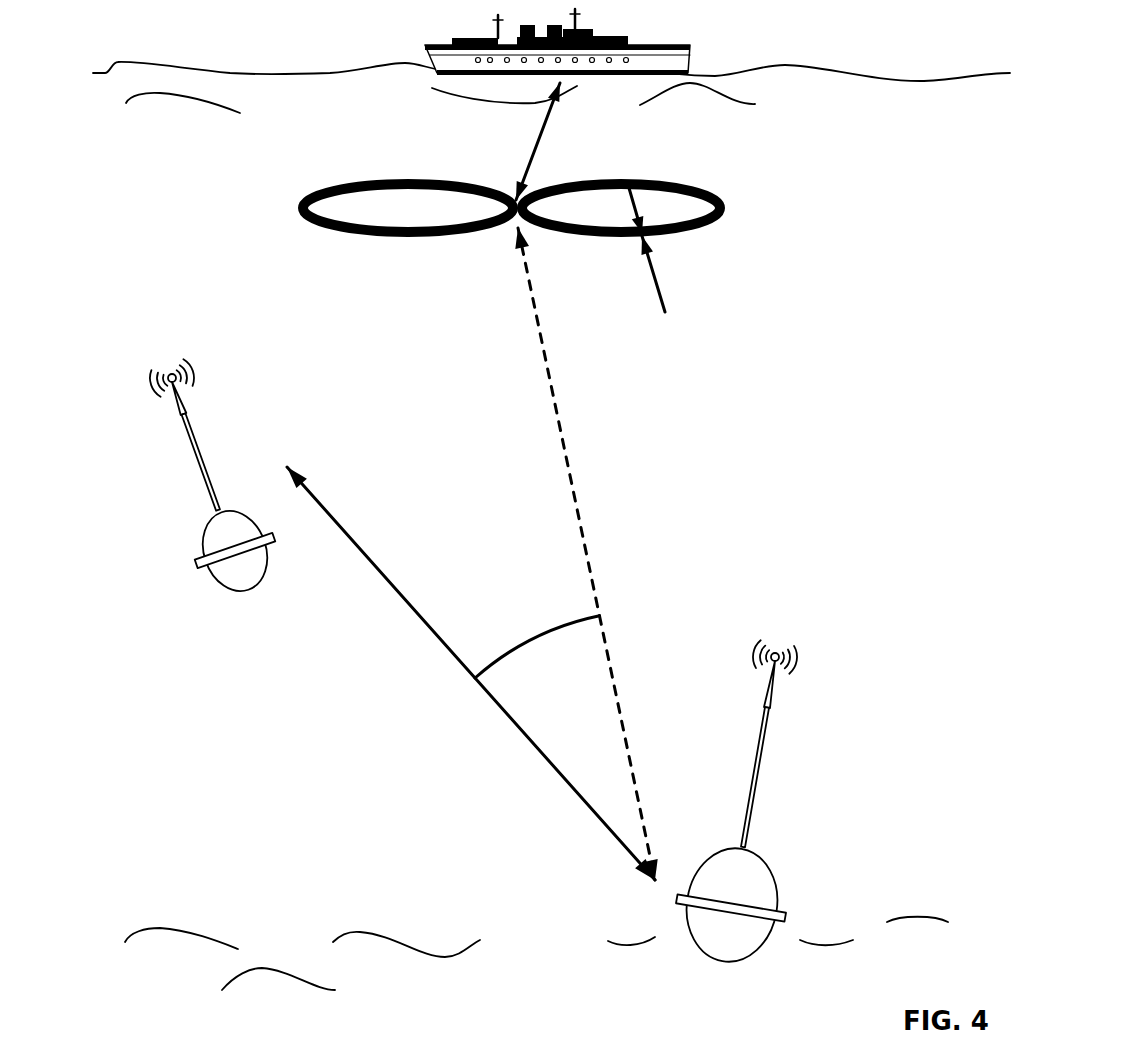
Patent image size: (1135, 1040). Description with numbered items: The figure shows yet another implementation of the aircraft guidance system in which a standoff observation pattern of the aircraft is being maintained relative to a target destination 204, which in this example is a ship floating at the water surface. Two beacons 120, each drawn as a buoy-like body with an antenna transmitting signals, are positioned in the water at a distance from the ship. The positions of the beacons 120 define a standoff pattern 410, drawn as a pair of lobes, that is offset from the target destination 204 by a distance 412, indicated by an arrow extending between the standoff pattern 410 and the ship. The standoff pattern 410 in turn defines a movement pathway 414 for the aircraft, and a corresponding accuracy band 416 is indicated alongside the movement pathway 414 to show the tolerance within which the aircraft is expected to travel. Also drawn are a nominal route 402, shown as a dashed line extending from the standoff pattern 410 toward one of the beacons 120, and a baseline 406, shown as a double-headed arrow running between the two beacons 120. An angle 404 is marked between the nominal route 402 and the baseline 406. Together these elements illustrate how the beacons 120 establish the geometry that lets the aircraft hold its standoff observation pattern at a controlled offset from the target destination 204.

The target destination 204 is at (670, 46).
The standoff pattern 410 is at (703, 170).
The distance 412 is at (538, 142).
The movement pathway 414 is at (748, 195).
The accuracy band 416 is at (665, 312).
The nominal route 402 is at (603, 497).
The angle 404 is at (522, 613).
The baseline 406 is at (550, 713).
The beacons 120 is at (200, 338).